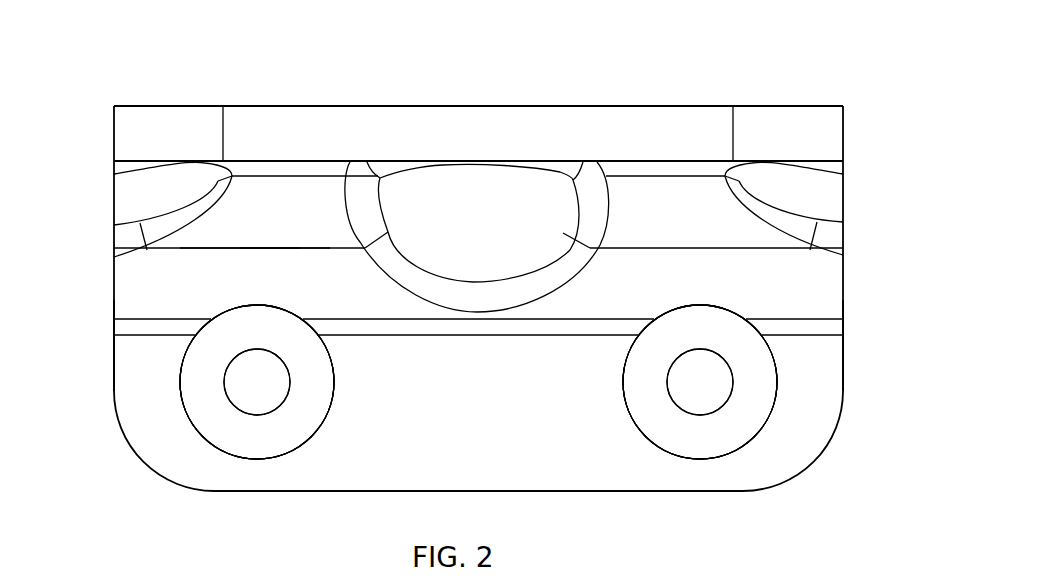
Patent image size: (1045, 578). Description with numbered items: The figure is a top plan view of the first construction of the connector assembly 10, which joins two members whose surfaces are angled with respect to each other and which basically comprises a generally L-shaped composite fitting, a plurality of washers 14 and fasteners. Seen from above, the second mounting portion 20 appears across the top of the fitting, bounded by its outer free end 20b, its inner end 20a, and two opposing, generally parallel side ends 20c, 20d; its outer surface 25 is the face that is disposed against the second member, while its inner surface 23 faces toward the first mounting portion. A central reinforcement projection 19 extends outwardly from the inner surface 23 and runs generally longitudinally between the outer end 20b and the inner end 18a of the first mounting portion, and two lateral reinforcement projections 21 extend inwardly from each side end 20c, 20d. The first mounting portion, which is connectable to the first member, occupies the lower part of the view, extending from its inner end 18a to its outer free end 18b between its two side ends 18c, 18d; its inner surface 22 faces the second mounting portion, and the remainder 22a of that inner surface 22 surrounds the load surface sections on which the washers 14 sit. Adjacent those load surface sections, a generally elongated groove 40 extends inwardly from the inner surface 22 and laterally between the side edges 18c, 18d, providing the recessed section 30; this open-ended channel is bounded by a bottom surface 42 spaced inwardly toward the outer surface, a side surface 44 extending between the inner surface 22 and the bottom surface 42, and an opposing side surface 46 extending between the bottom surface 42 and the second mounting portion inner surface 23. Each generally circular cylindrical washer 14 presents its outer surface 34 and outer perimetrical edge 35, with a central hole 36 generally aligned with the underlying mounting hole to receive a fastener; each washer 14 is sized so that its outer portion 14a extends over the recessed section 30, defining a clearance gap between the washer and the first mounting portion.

The connector assembly 10 is at (148, 40).
The washer 14 is at (176, 391).
The outer portion of the washer 14a is at (262, 312).
The inner end of the first mounting portion 18a is at (640, 262).
The outer free end of the first mounting portion 18b is at (618, 492).
The side end of the first mounting portion 18c is at (848, 357).
The side end of the first mounting portion 18d is at (112, 360).
The central reinforcement projection 19 is at (508, 190).
The second mounting portion 20 is at (489, 93).
The inner end of the second mounting portion 20a is at (303, 242).
The outer free end of the second mounting portion 20b is at (678, 127).
The side end of the second mounting portion 20c is at (846, 198).
The side end of the second mounting portion 20d is at (113, 148).
The lateral reinforcement projection 21 is at (130, 203).
The inner surface of the first mounting portion 22 is at (527, 473).
The remainder of the first mounting portion inner surface 22a is at (368, 468).
The inner surface of the second mounting portion 23 is at (283, 186).
The outer surface of the second mounting portion 25 is at (614, 96).
The recessed section 30 is at (105, 273).
The outer surface of the washer 34 is at (305, 423).
The outer perimetrical edge of the washer 35 is at (231, 307).
The washer hole 36 is at (290, 392).
The groove 40 is at (248, 268).
The bottom surface of the groove 42 is at (609, 277).
The side surface of the groove 44 is at (505, 325).
The opposing side surface of the groove 46 is at (265, 244).